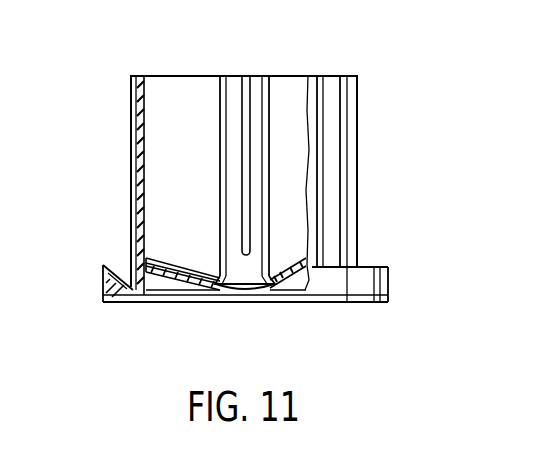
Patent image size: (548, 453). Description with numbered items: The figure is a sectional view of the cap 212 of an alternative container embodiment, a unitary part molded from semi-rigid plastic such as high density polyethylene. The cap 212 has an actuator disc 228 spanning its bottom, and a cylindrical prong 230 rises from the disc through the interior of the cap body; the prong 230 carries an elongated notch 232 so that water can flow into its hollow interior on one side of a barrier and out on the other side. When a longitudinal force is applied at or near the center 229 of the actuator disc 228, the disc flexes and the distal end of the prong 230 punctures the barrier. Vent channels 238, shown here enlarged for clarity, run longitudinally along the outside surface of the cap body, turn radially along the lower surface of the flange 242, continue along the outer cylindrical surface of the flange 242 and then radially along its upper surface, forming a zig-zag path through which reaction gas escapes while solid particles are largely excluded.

The cap 212 is at (112, 88).
The actuator disc 228 is at (200, 288).
The center of actuator disc 229 is at (262, 291).
The cylindrical prong 230 is at (232, 103).
The elongated notch 232 is at (250, 88).
The vent channels 238 is at (140, 178).
The flange 242 is at (115, 290).